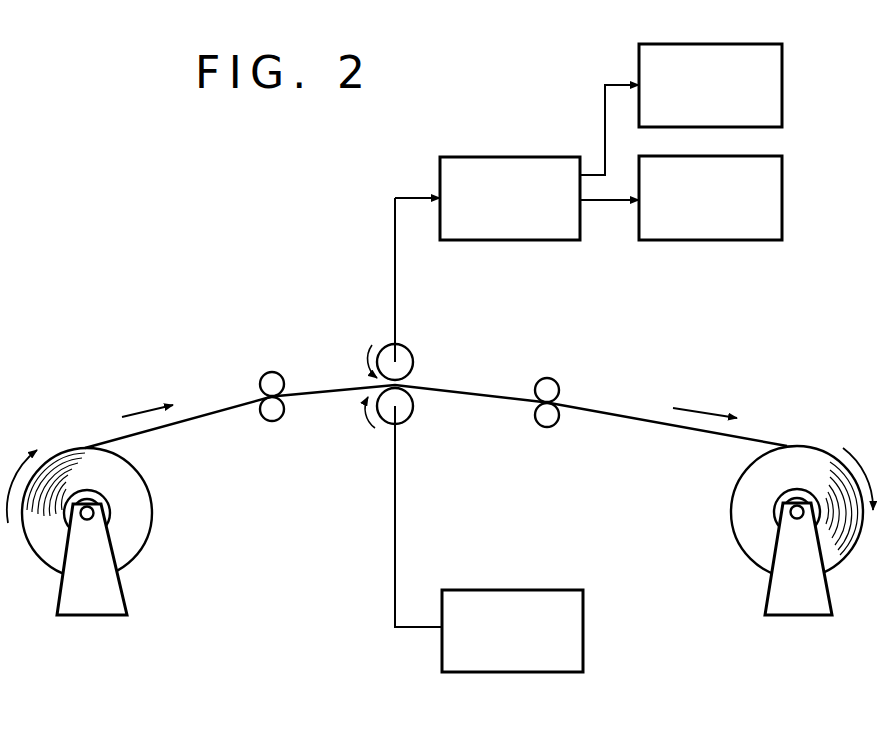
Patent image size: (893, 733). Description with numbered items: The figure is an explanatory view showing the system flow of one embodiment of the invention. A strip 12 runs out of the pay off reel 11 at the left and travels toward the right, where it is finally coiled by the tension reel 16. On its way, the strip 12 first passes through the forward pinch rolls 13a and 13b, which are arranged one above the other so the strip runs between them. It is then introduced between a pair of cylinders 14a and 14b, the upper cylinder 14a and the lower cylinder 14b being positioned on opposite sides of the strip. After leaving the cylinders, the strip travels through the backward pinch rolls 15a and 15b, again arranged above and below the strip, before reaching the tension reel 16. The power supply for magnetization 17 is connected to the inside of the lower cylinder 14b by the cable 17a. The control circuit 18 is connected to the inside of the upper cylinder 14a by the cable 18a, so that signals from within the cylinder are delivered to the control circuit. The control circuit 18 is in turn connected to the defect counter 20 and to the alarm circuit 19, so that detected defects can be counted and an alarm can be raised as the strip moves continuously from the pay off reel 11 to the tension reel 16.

The pay off reel 11 is at (113, 593).
The strip 12 is at (210, 410).
The forward pinch roll 13a is at (275, 371).
The forward pinch roll 13b is at (283, 419).
The cylinder 14a is at (408, 347).
The cylinder 14b is at (410, 418).
The backward pinch roll 15a is at (558, 382).
The backward pinch roll 15b is at (558, 423).
The tension reel 16 is at (818, 595).
The power supply for magnetization 17 is at (583, 625).
The cable 17a is at (395, 568).
The control circuit 18 is at (497, 156).
The cable 18a is at (395, 282).
The alarm circuit 19 is at (782, 198).
The defect counter 20 is at (782, 73).